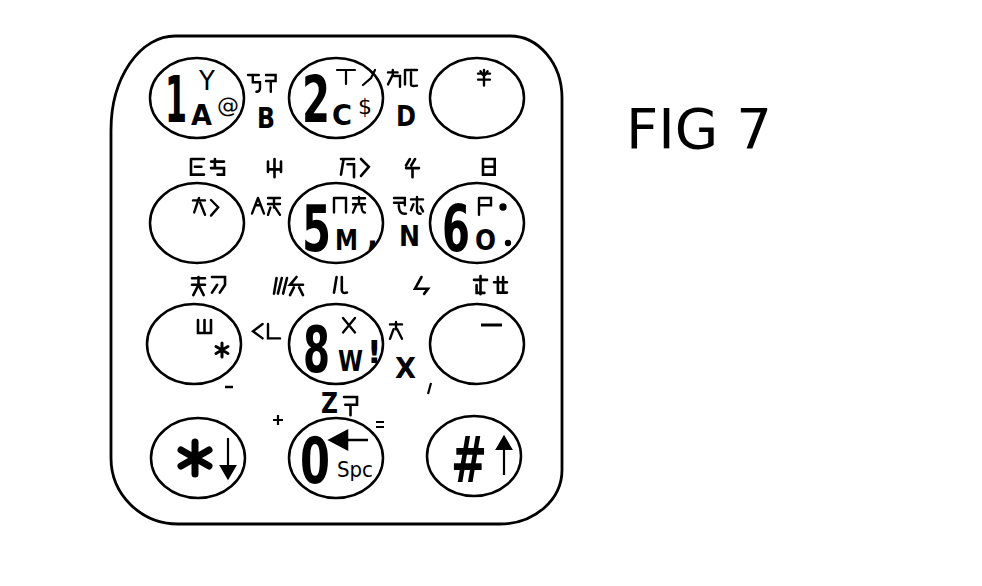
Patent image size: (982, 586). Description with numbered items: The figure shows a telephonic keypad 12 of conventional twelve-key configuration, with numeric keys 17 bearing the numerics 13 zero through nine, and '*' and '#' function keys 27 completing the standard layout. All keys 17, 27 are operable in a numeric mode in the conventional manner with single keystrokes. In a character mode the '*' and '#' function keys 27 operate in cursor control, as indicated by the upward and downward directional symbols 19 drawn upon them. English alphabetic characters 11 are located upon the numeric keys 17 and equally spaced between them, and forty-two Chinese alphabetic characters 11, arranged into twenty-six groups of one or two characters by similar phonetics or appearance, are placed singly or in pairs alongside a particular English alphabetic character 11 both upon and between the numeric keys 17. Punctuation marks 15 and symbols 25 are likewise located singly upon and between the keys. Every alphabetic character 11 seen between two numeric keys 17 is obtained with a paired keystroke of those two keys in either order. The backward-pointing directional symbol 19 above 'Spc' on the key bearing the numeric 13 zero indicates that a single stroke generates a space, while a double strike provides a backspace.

The alphabetic characters 11 is at (145, 163).
The keypad 12 is at (543, 392).
The numerics 13 is at (166, 358).
The punctuation marks 15 is at (525, 343).
The numeric keys 17 is at (165, 253).
The directional symbol 19 is at (233, 476).
The symbols 25 is at (521, 96).
The '*' & '#' function keys 27 is at (170, 497).